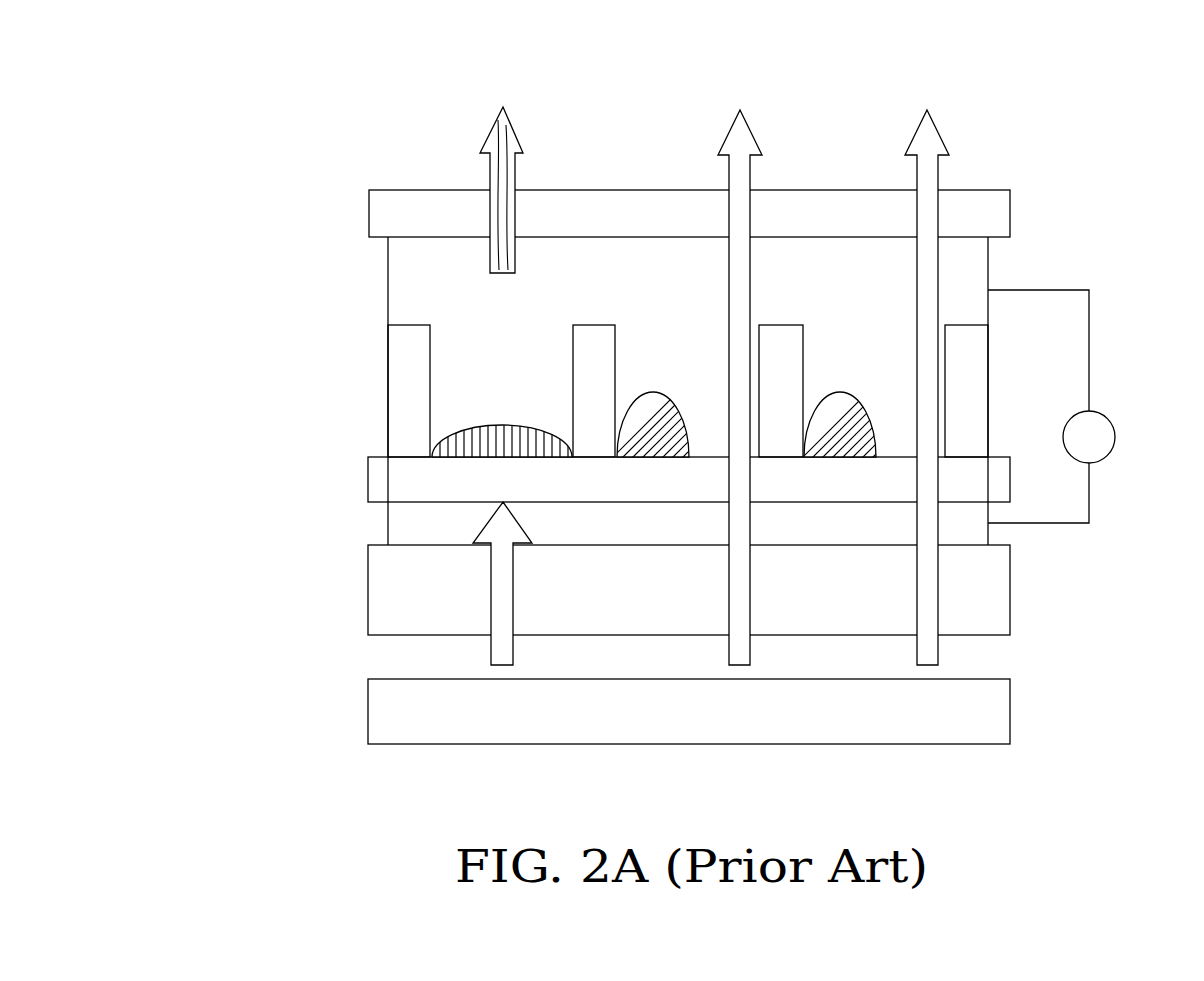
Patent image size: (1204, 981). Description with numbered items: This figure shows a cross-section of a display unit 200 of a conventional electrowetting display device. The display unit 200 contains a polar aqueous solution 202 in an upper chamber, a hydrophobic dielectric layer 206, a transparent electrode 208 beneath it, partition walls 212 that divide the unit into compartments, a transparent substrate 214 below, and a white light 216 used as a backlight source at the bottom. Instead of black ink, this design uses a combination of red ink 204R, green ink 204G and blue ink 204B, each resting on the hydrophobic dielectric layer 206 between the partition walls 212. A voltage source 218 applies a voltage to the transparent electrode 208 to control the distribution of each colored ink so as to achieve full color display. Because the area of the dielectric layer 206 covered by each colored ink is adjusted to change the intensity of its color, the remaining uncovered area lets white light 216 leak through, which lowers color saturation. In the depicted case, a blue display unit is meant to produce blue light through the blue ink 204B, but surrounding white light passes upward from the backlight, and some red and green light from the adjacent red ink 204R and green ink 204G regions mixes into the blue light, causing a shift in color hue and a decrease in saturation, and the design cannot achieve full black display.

The display unit 200 is at (177, 58).
The polar aqueous solution 202 is at (410, 292).
The blue ink 204B is at (513, 425).
The red ink 204R is at (668, 392).
The green ink 204G is at (848, 410).
The hydrophobic dielectric layer 206 is at (380, 478).
The transparent electrode 208 is at (425, 525).
The partition walls 212 is at (407, 402).
The transparent substrate 214 is at (385, 600).
The white light 216 is at (382, 716).
The voltage source 218 is at (1103, 412).